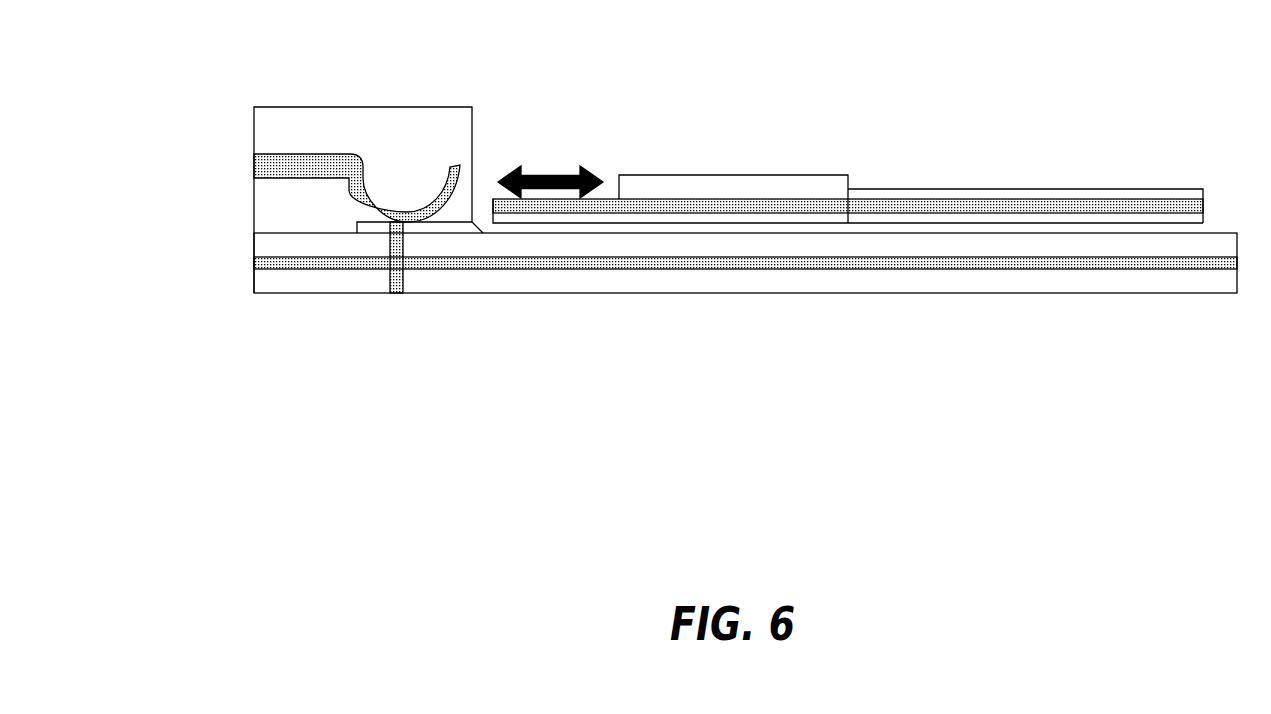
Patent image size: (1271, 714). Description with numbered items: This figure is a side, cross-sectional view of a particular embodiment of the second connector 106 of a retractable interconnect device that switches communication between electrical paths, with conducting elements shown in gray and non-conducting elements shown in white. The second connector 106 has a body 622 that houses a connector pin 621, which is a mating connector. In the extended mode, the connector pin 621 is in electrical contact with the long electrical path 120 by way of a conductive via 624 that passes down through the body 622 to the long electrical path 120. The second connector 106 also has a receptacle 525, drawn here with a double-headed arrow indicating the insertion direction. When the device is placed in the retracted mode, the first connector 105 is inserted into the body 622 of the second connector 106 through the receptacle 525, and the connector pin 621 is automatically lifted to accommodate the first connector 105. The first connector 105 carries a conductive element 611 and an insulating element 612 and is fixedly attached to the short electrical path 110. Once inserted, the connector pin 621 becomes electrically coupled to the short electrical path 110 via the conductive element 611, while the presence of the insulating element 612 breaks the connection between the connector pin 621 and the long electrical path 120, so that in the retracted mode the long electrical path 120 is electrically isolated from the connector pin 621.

The second connector 106 is at (251, 77).
The connector pin 621 is at (292, 167).
The body 622 is at (272, 217).
The conductive via 624 is at (397, 285).
The receptacle 525 is at (472, 222).
The insulating element 612 is at (642, 219).
The conductive element 611 is at (733, 205).
The first connector 105 is at (848, 151).
The short electrical path 110 is at (1028, 203).
The long electrical path 120 is at (973, 262).